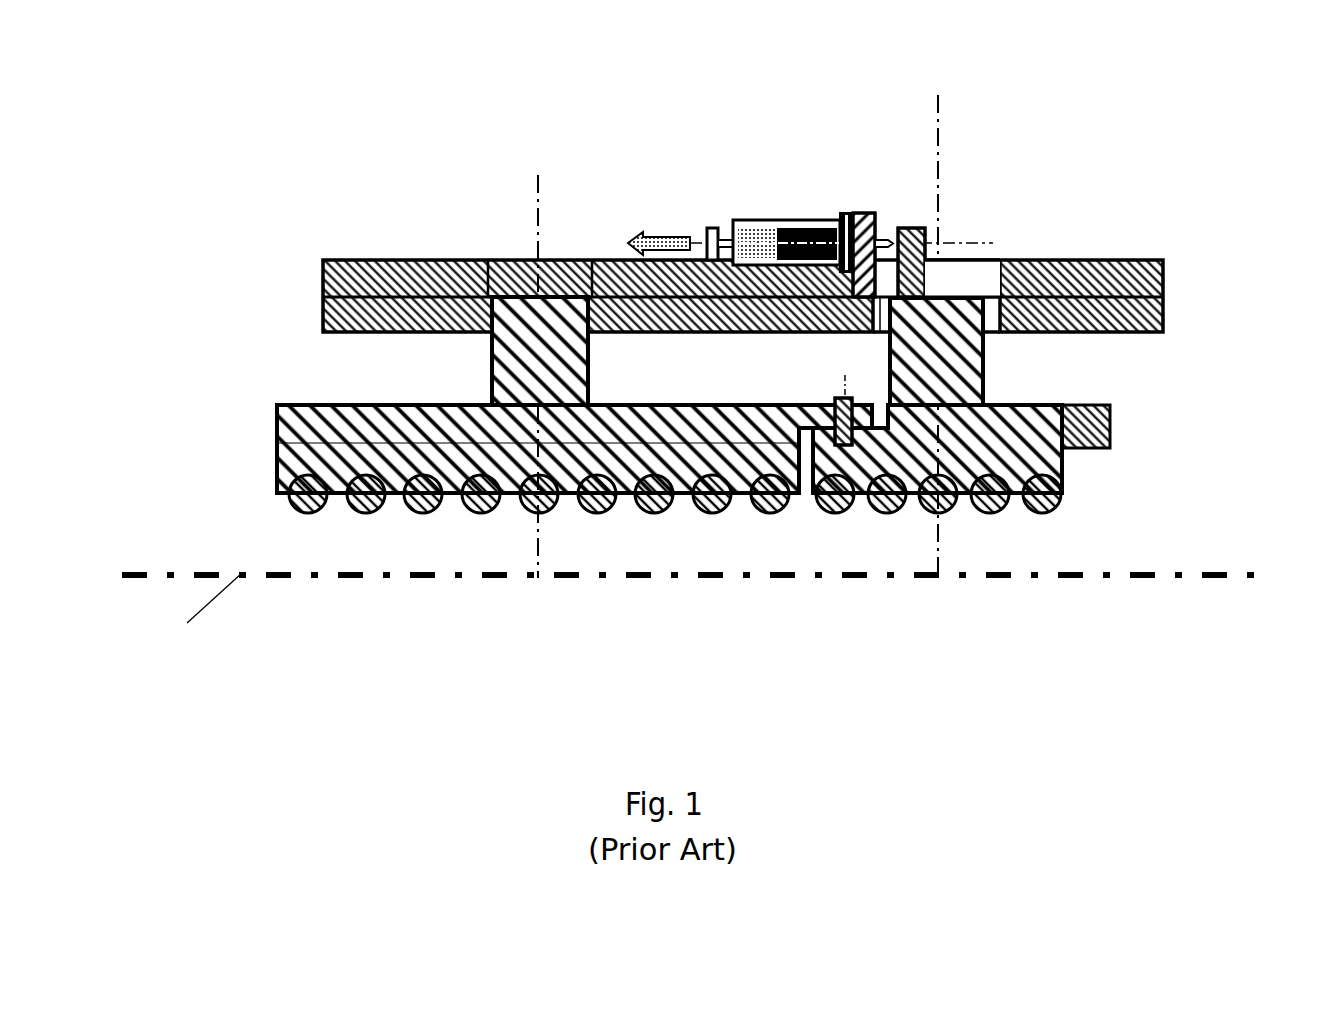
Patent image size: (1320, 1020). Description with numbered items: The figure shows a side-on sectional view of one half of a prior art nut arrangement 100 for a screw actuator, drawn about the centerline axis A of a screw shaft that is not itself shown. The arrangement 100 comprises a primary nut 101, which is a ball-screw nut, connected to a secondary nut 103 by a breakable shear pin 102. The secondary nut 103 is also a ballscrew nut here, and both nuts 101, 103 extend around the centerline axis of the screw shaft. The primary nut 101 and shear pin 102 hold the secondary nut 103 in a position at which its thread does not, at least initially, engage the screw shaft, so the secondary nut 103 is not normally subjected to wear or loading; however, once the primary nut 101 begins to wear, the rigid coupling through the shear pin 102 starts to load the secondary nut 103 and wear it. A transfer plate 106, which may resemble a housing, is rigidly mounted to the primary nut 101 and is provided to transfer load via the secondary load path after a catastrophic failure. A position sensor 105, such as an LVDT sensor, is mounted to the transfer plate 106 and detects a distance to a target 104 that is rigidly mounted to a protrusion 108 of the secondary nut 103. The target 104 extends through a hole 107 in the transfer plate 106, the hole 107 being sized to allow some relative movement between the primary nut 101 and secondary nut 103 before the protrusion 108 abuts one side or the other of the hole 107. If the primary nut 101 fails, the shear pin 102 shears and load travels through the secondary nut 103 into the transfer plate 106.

The nut arrangement 100 is at (316, 82).
The primary nut 101 is at (360, 443).
The shear pin 102 is at (833, 428).
The secondary nut 103 is at (1062, 466).
The target 104 is at (928, 228).
The position sensor 105 is at (785, 212).
The transfer plate 106 is at (335, 258).
The hole 107 is at (958, 267).
The protrusion 108 is at (985, 352).